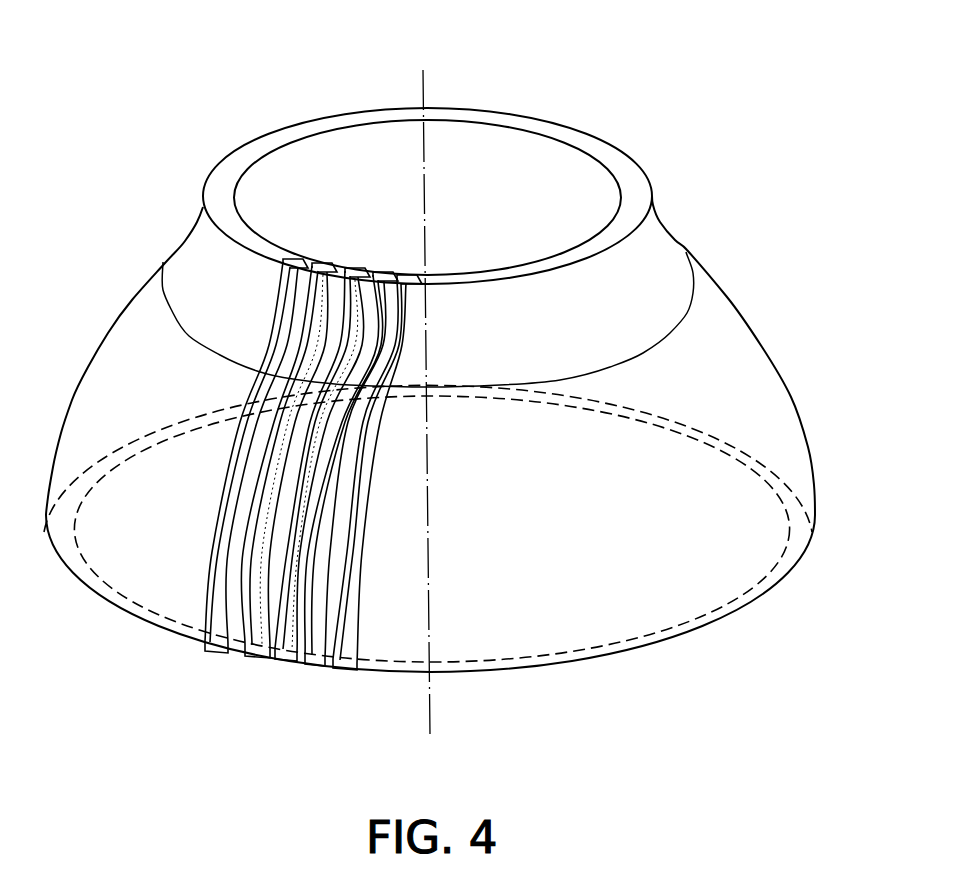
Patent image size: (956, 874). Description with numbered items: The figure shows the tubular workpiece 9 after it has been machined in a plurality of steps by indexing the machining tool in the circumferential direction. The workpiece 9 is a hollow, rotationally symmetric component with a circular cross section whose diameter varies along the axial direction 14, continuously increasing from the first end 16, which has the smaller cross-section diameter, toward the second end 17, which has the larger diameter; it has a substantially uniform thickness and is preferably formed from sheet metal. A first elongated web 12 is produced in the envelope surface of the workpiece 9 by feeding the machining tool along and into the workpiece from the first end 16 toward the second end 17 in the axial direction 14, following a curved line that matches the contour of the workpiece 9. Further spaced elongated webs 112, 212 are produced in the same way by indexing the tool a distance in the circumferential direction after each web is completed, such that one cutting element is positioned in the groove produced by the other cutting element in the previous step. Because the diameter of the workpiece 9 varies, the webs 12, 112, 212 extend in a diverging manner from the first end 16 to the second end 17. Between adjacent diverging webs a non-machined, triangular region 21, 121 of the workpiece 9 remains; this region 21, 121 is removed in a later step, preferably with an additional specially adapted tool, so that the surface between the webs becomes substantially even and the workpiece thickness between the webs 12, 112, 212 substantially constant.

The workpiece 9 is at (728, 317).
The axial direction 14 is at (424, 90).
The first end 16 is at (672, 158).
The second end 17 is at (690, 658).
The elongated web 12 is at (217, 648).
The non-machined triangular region 21 is at (245, 653).
The elongated web 112 is at (275, 663).
The non-machined triangular region 121 is at (312, 666).
The elongated web 212 is at (342, 669).